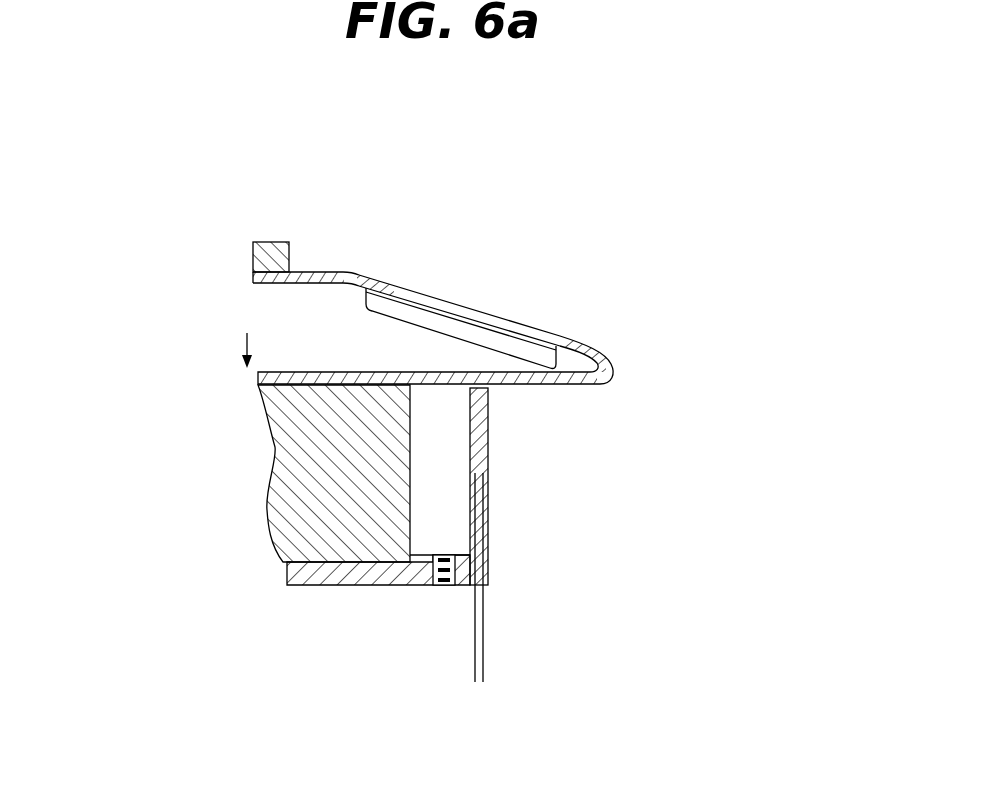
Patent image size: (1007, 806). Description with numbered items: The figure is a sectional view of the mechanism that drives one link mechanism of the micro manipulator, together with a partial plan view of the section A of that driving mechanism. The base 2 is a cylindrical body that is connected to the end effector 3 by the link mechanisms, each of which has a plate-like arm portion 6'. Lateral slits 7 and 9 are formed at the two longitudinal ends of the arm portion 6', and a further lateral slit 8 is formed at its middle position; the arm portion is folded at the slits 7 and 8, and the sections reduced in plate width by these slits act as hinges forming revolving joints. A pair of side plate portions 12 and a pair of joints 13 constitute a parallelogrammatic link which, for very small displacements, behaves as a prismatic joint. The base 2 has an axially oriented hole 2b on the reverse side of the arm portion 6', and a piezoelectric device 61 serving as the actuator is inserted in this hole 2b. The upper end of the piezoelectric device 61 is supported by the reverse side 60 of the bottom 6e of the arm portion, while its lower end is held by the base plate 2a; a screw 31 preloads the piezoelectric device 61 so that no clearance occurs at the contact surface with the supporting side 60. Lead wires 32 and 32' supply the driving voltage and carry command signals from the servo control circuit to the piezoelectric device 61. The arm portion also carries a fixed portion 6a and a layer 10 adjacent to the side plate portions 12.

The base 2 is at (488, 513).
The base plate 2a is at (318, 587).
The hole 2b is at (467, 468).
The end effector 3 is at (263, 242).
The cover fixed portion 6a is at (325, 271).
The bottom of the arm portion 6e is at (548, 384).
The arm portion 6' is at (593, 290).
The lateral slit 7 is at (350, 273).
The lateral slit 8 is at (613, 376).
The lateral slit 9 is at (337, 373).
The adhesive layer 10 is at (500, 340).
The side plate portion 12 is at (525, 348).
The joint 13 is at (377, 282).
The screw 31 is at (440, 587).
The lead wire 32 is at (481, 586).
The lead wire 32' is at (440, 642).
The reverse side 60 is at (440, 384).
The piezoelectric device 61 is at (453, 443).
The section A is at (248, 333).